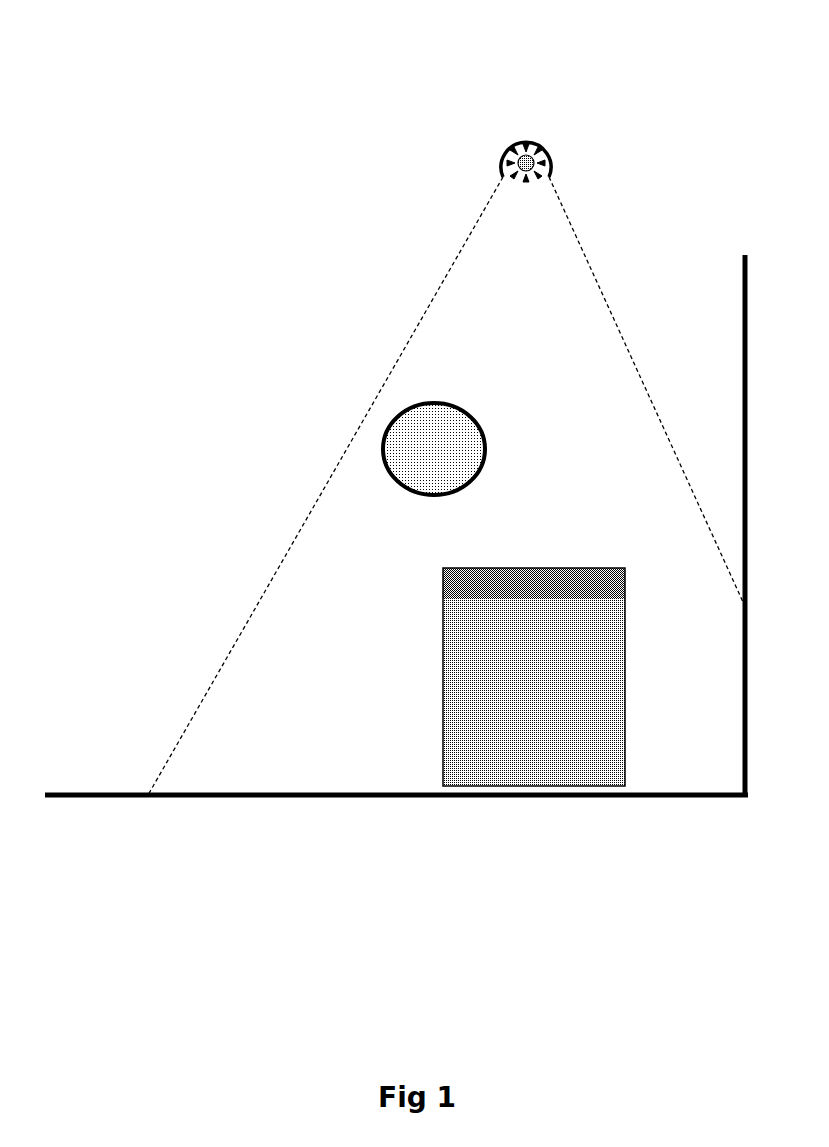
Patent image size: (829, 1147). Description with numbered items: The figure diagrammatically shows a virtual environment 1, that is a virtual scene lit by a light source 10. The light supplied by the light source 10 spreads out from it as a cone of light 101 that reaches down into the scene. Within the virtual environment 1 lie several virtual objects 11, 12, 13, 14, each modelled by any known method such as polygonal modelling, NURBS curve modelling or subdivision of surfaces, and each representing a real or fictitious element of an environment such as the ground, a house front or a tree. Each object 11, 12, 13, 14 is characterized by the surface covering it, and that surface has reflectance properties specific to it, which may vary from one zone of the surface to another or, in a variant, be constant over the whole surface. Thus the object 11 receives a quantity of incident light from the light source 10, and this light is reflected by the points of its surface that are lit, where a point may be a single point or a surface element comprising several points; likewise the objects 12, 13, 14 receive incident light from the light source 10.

The virtual environment 1 is at (283, 216).
The light source 10 is at (538, 149).
The cone of light 101 is at (437, 290).
The virtual object 11 is at (463, 430).
The virtual object 12 is at (462, 684).
The virtual object 13 is at (136, 794).
The virtual object 14 is at (741, 366).